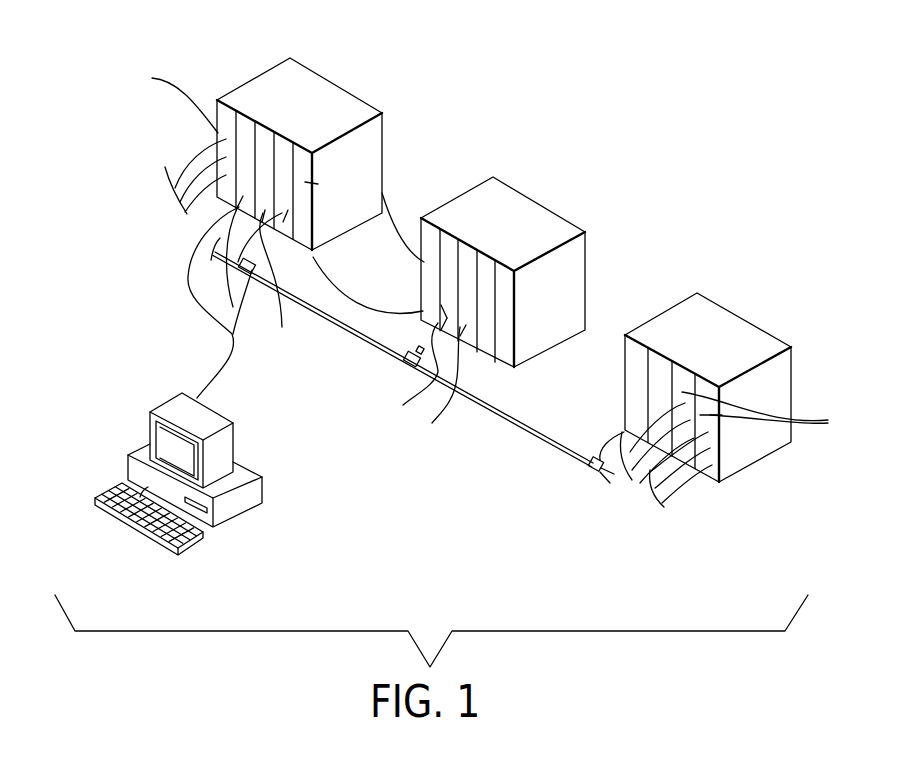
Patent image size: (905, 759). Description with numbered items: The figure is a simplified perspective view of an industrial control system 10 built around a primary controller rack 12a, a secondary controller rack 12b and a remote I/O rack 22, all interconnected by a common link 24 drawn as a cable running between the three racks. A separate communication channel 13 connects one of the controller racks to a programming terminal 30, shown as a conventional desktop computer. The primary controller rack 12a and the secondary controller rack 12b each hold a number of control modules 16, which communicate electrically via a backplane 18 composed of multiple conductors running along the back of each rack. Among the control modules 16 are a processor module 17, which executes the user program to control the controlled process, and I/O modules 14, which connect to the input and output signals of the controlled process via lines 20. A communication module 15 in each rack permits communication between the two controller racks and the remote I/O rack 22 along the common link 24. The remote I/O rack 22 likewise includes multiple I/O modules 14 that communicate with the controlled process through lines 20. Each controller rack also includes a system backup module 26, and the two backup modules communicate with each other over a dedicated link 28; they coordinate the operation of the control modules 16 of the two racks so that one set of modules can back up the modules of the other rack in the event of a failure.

The industrial control system 10 is at (594, 143).
The primary controller rack 12a is at (330, 96).
The secondary controller rack 12b is at (548, 222).
The communication channel 13 is at (188, 278).
The I/O modules 14 is at (489, 248).
The communication module 15 is at (630, 362).
The control modules 16 is at (274, 125).
The processor module 17 is at (346, 325).
The backplane 18 is at (308, 56).
The lines 20 is at (190, 159).
The remote I/O rack 22 is at (747, 318).
The common link 24 is at (522, 429).
The system backup module 26 is at (312, 183).
The dedicated link 28 is at (348, 308).
The programming terminal 30 is at (233, 428).